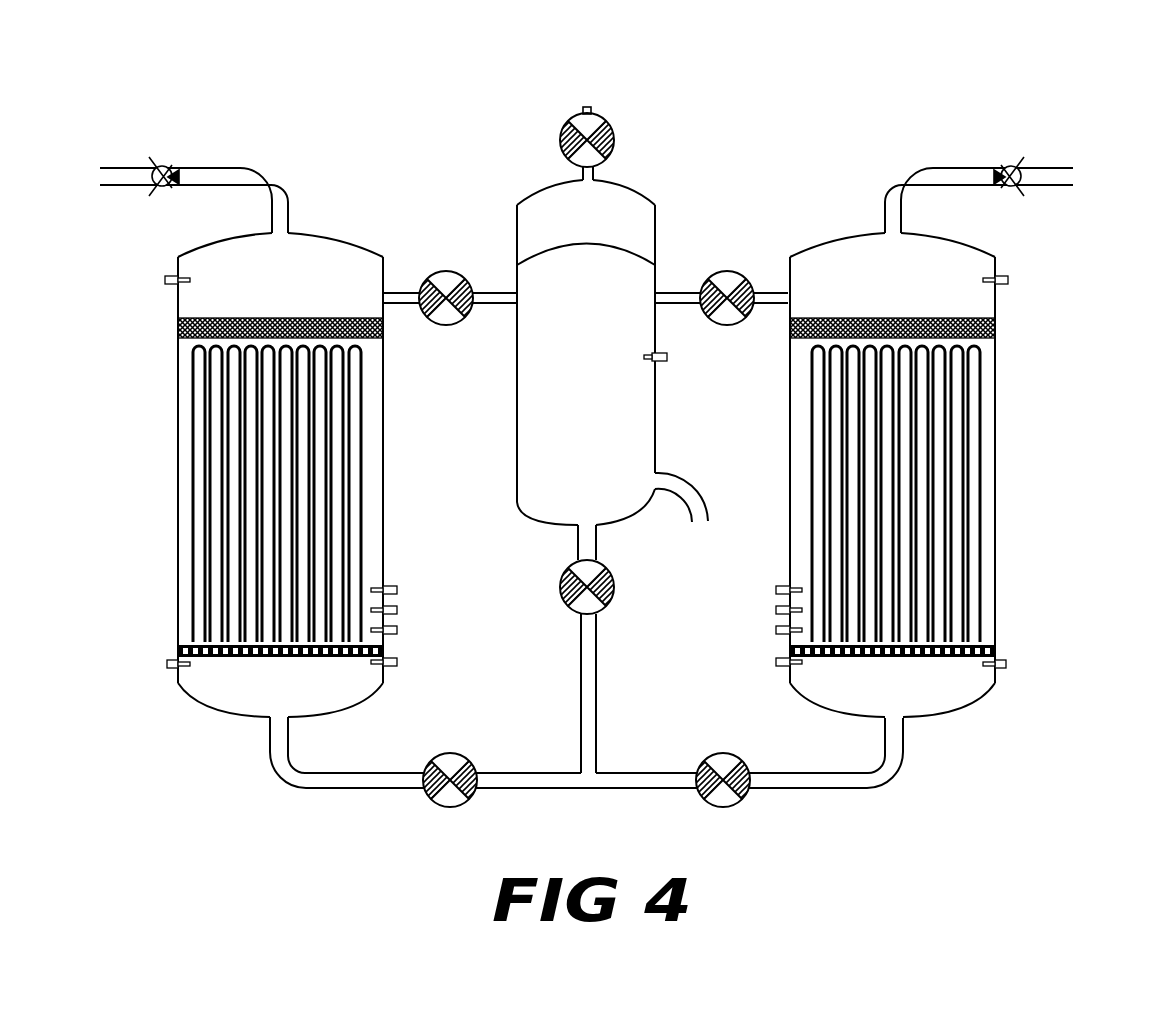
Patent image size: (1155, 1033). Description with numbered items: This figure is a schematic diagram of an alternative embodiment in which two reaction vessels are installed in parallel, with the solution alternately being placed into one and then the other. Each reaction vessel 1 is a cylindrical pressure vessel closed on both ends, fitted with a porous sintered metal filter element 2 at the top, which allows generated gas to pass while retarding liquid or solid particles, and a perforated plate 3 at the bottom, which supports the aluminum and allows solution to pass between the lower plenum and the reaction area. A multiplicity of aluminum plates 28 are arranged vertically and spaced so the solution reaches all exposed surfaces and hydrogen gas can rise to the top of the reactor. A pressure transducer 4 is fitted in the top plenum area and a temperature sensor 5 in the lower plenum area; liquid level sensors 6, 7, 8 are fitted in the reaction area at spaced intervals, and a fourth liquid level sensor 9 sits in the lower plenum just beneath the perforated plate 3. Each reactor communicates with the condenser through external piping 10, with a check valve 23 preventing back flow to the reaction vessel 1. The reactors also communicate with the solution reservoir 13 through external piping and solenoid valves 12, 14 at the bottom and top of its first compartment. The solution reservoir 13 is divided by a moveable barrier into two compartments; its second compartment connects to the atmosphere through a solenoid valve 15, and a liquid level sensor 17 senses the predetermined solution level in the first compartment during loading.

The reaction vessel 1 is at (327, 237).
The porous sintered metal filter element 2 is at (325, 317).
The perforated plate 3 is at (263, 657).
The pressure transducer 4 is at (170, 275).
The temperature sensor 5 is at (167, 668).
The liquid level sensor 6 is at (397, 590).
The liquid level sensor 7 is at (397, 610).
The liquid level sensor 8 is at (397, 630).
The fourth liquid level sensor 9 is at (397, 662).
The external piping 10 is at (230, 168).
The solenoid valve 12 is at (610, 575).
The solution reservoir 13 is at (635, 190).
The solenoid valve 14 is at (446, 271).
The solenoid valve 15 is at (608, 122).
The liquid level sensor 17 is at (667, 360).
The check valve 23 is at (167, 168).
The aluminum plates 28 is at (205, 465).